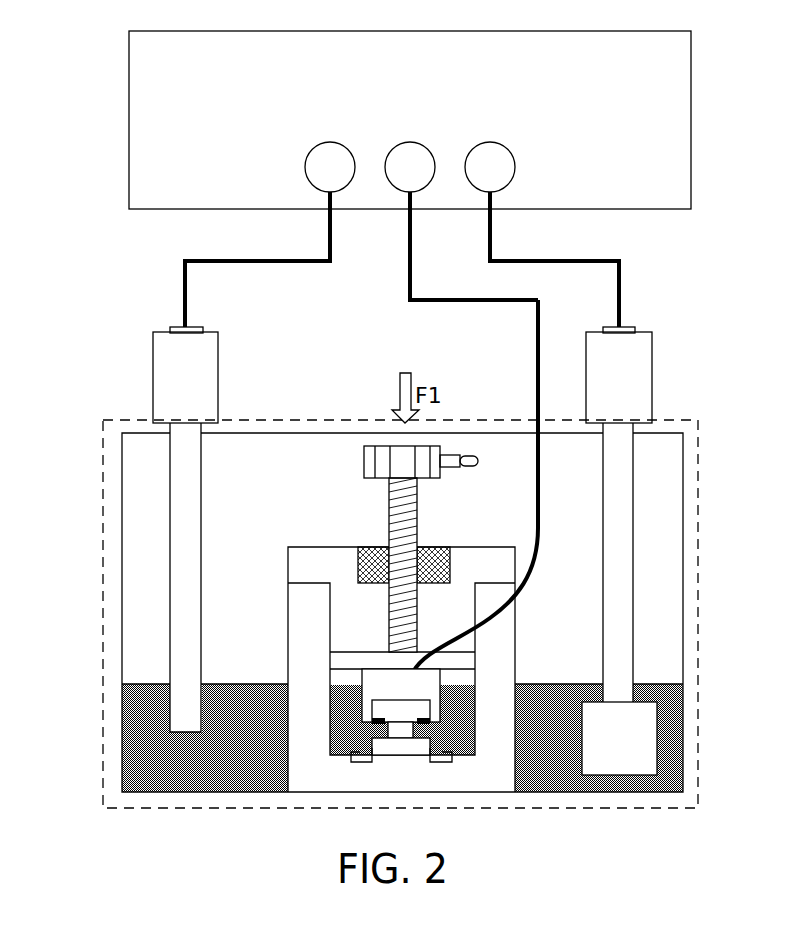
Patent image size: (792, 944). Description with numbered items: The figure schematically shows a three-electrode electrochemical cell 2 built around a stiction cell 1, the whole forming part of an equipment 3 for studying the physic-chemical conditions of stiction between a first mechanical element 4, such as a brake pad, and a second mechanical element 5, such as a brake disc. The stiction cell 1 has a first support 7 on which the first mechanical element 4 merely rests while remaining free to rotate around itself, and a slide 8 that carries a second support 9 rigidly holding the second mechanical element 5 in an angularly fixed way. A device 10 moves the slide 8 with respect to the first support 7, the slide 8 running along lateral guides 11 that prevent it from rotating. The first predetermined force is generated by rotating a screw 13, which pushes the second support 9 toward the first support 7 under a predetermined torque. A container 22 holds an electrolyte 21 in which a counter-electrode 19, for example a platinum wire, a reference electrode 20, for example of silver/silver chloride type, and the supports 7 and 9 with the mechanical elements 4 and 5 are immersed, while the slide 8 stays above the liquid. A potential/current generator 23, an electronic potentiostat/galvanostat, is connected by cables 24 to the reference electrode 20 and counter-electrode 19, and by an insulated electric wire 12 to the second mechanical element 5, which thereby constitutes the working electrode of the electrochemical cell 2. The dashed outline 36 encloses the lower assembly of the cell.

The stiction cell 1 is at (500, 476).
The electrochemical cell 2 is at (112, 316).
The equipment 3 is at (723, 645).
The first mechanical element 4 is at (405, 735).
The second mechanical element 5 is at (428, 712).
The first support 7 is at (380, 750).
The slide 8 is at (338, 653).
The second support 9 is at (378, 683).
The device for moving the slide 10 is at (287, 452).
The lateral guides 11 is at (335, 600).
The insulated electric wire 12 is at (536, 352).
The screw 13 is at (392, 507).
The counter-electrode 19 is at (608, 625).
The reference electrode 20 is at (190, 535).
The electrolyte 21 is at (533, 781).
The container 22 is at (115, 485).
The potential/current generator 23 is at (700, 63).
The cables 24 is at (275, 266).
The enclosure 36 is at (100, 821).